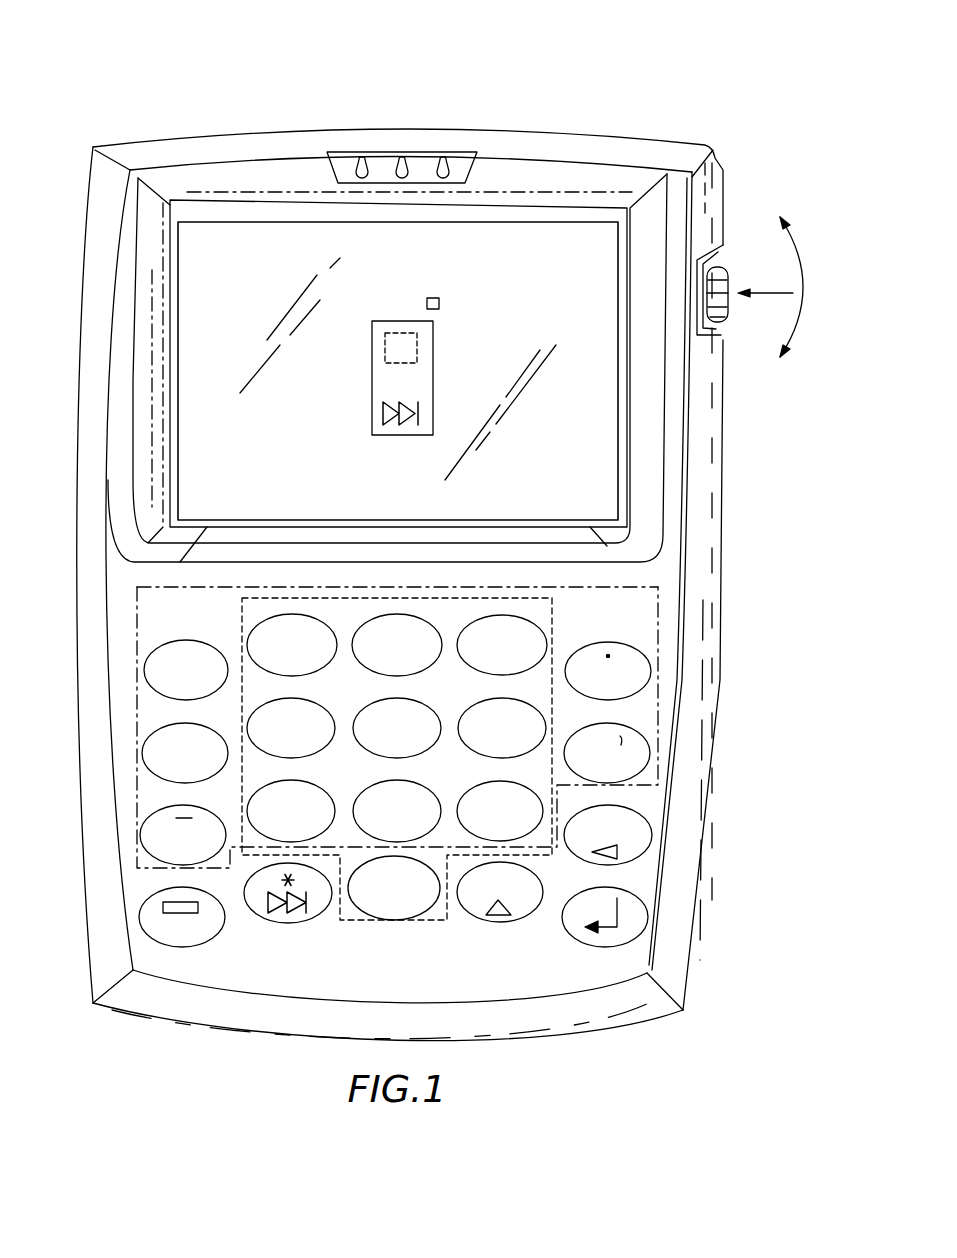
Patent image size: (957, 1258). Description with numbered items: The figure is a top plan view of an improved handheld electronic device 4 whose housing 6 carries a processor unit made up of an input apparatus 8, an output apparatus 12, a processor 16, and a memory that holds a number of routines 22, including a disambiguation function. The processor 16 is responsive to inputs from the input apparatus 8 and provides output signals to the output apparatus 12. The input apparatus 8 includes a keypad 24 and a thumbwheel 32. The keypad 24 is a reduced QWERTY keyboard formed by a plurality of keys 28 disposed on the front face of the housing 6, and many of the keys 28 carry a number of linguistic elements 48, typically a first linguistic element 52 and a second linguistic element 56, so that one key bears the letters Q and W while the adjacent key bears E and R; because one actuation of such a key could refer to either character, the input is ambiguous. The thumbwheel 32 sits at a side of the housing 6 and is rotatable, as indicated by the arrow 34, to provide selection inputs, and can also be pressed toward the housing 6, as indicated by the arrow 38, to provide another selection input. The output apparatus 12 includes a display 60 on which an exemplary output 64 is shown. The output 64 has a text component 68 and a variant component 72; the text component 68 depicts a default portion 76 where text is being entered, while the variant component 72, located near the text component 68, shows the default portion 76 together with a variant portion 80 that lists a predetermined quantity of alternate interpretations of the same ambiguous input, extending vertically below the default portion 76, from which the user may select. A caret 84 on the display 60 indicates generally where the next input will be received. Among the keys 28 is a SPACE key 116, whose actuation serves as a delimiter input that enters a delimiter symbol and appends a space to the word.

The handheld electronic device 4 is at (487, 78).
The housing 6 is at (602, 135).
The input apparatus 8 is at (680, 588).
The output apparatus 12 is at (482, 184).
The processor 16 is at (122, 612).
The routines 22 is at (118, 582).
The keypad 24 is at (661, 719).
The keys 28 is at (165, 643).
The thumbwheel 32 is at (717, 277).
The arrow 34 is at (805, 272).
The arrow 38 is at (770, 293).
The linguistic elements 48 is at (160, 773).
The first linguistic element 52 is at (182, 735).
The second linguistic element 56 is at (197, 753).
The display 60 is at (563, 133).
The output 64 is at (450, 316).
The text component 68 is at (418, 293).
The variant component 72 is at (372, 397).
The default portion 76 is at (383, 343).
The variant portion 80 is at (392, 380).
The caret 84 is at (437, 295).
The SPACE key 116 is at (423, 907).